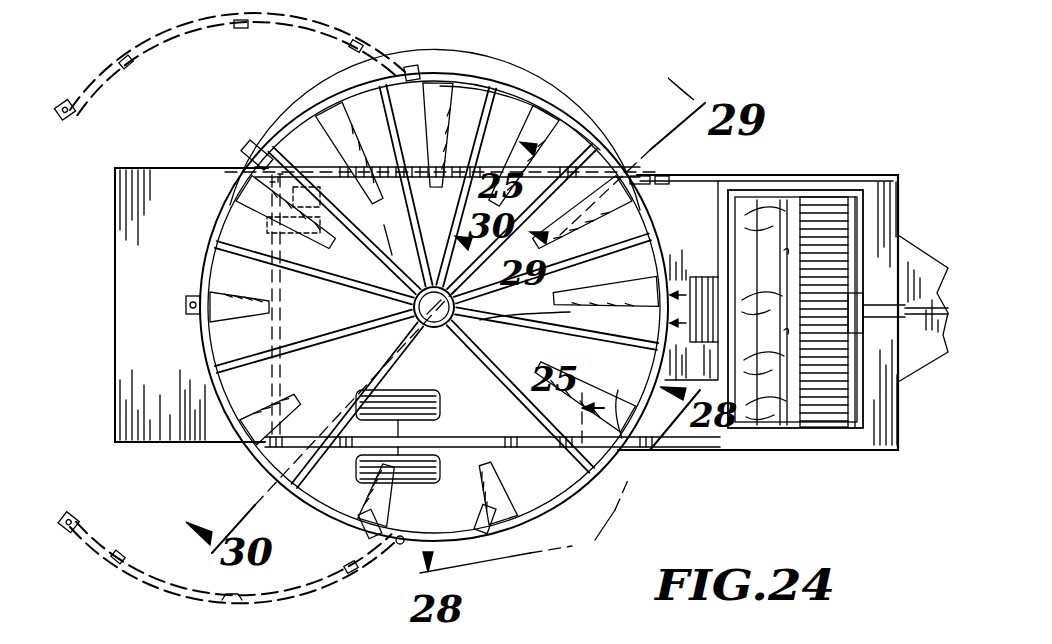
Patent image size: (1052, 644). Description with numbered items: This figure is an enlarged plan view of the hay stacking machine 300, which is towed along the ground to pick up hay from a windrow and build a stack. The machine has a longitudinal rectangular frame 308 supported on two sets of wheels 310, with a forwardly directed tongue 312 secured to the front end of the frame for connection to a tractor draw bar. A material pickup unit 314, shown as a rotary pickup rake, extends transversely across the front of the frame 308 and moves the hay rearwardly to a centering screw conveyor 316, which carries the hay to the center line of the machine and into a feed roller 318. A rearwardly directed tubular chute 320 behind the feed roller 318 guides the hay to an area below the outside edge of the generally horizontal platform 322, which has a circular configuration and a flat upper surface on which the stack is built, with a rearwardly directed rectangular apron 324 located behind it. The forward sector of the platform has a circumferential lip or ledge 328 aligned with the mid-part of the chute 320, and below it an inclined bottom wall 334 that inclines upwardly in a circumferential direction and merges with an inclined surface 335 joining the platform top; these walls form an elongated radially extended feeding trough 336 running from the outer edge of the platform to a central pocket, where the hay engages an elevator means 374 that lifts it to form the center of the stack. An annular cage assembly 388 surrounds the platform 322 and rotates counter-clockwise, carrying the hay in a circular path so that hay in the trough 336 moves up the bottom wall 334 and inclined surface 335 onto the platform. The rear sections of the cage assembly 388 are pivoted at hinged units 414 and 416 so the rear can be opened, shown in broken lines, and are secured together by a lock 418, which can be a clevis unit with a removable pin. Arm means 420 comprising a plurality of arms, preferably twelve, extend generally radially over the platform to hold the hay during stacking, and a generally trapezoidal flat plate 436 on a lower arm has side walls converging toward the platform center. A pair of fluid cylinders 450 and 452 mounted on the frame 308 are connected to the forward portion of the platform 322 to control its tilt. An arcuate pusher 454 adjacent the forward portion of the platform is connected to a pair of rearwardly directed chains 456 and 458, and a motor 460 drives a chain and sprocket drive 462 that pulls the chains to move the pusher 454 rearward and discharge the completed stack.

The machine 300 is at (648, 64).
The longitudinal rectangular frame 308 is at (752, 176).
The wheels 310 is at (441, 482).
The tongue 312 is at (912, 262).
The material pickup unit 314 is at (828, 214).
The centering screw conveyor 316 is at (778, 428).
The feed roller 318 is at (700, 277).
The tubular chute 320 is at (662, 253).
The platform 322 is at (445, 115).
The apron 324 is at (115, 378).
The circumferential lip or ledge 328 is at (600, 331).
The inclined ramp or bottom wall 334 is at (520, 128).
The inclined surface 335 is at (384, 225).
The feeding trough 336 is at (620, 298).
The elevator means 374 is at (405, 313).
The annular cage assembly 388 is at (522, 84).
The hinged unit 414 is at (411, 69).
The hinged unit 416 is at (437, 510).
The lock 418 is at (191, 299).
The arm means 420 is at (380, 260).
The flat plate 436 is at (575, 140).
The fluid cylinder 450 is at (652, 178).
The fluid cylinder 452 is at (643, 458).
The arcuate pusher 454 is at (628, 480).
The chain 456 is at (356, 173).
The chain 458 is at (506, 430).
The motor 460 is at (262, 152).
The chain and sprocket drive 462 is at (268, 203).